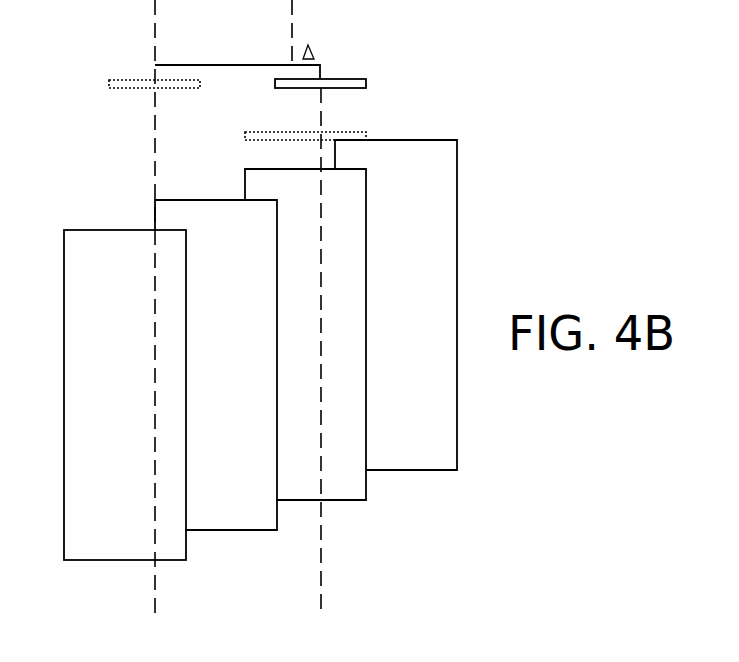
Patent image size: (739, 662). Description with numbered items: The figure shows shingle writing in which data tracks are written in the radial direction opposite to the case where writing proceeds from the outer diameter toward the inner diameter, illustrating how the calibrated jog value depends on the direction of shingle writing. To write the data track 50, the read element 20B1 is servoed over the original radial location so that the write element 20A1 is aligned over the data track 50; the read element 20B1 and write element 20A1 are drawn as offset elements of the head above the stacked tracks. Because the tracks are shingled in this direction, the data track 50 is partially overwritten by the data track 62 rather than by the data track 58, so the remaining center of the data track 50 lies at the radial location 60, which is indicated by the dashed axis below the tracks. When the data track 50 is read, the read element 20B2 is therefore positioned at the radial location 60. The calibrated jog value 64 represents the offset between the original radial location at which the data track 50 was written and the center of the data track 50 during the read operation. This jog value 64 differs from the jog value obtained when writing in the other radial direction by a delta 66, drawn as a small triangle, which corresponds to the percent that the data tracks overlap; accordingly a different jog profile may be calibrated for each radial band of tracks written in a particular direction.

The read element 20B1 is at (101, 74).
The read element 20B2 is at (377, 74).
The write element 20A1 is at (377, 126).
The calibrated jog value 64 is at (222, 54).
The delta 66 is at (328, 44).
The data track 58 is at (450, 162).
The data track 50 is at (360, 190).
The data track 62 is at (270, 222).
The radial location 60 is at (333, 551).